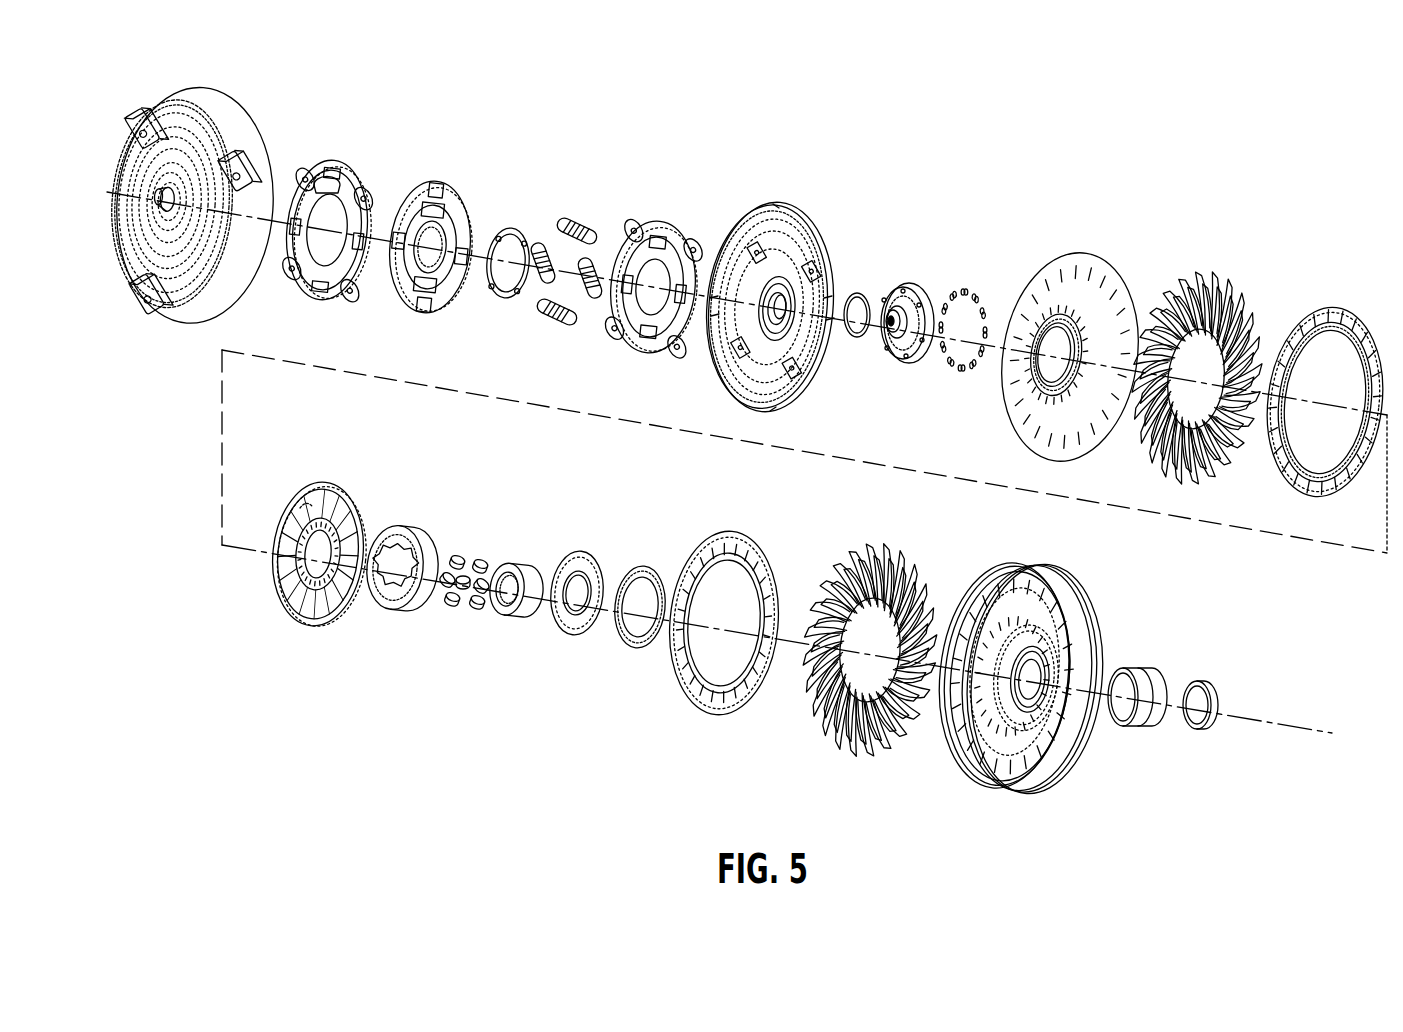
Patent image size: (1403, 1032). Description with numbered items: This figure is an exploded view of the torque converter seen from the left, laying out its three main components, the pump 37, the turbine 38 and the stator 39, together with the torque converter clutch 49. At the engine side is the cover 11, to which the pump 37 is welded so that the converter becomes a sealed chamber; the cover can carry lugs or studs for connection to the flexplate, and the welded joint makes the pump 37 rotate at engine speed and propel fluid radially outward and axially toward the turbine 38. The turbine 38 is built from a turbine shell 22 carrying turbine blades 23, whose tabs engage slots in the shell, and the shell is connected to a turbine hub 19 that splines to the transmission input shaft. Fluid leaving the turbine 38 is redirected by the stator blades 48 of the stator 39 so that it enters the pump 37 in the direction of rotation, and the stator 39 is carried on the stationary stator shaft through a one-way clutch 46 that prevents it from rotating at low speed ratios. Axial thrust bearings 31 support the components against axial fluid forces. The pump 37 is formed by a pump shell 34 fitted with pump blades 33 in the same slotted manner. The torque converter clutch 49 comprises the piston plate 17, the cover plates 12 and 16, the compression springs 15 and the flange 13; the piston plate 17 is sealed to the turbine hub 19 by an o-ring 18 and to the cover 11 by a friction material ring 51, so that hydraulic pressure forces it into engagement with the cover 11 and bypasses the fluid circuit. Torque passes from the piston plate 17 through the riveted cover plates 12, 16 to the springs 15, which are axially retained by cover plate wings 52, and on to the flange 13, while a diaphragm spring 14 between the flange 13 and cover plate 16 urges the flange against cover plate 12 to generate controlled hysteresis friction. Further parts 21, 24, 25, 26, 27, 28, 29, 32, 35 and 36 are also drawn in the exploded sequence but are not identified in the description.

The cover 11 is at (277, 120).
The cover plate 12 is at (372, 160).
The flange 13 is at (467, 178).
The diaphragm spring 14 is at (527, 213).
The compression springs 15 is at (607, 207).
The cover plate 16 is at (693, 207).
The piston plate 17 is at (832, 203).
The o-ring 18 is at (881, 276).
The turbine hub 19 is at (938, 262).
The bearing balls 21 is at (988, 290).
The turbine shell 22 is at (1104, 252).
The turbine blades 23 is at (1231, 280).
The turbine core ring 24 is at (1330, 298).
The stator 25 is at (358, 473).
The one-way clutch race 26 is at (431, 514).
The rollers 27 is at (484, 532).
The inner race 28 is at (541, 551).
The thrust washer 29 is at (603, 551).
The axial thrust bearings 31 is at (671, 558).
The impeller core ring 32 is at (786, 544).
The pump blades 33 is at (936, 555).
The pump shell 34 is at (1101, 591).
The impeller hub 35 is at (1159, 656).
The bushing 36 is at (1214, 673).
The pump 37 is at (1173, 817).
The turbine 38 is at (908, 180).
The stator 39 is at (568, 700).
The one-way clutch 46 is at (538, 628).
The stator blades 48 is at (327, 482).
The torque converter clutch 49 is at (897, 152).
The friction material ring 51 is at (772, 210).
The cover plate wings 52 is at (336, 175).